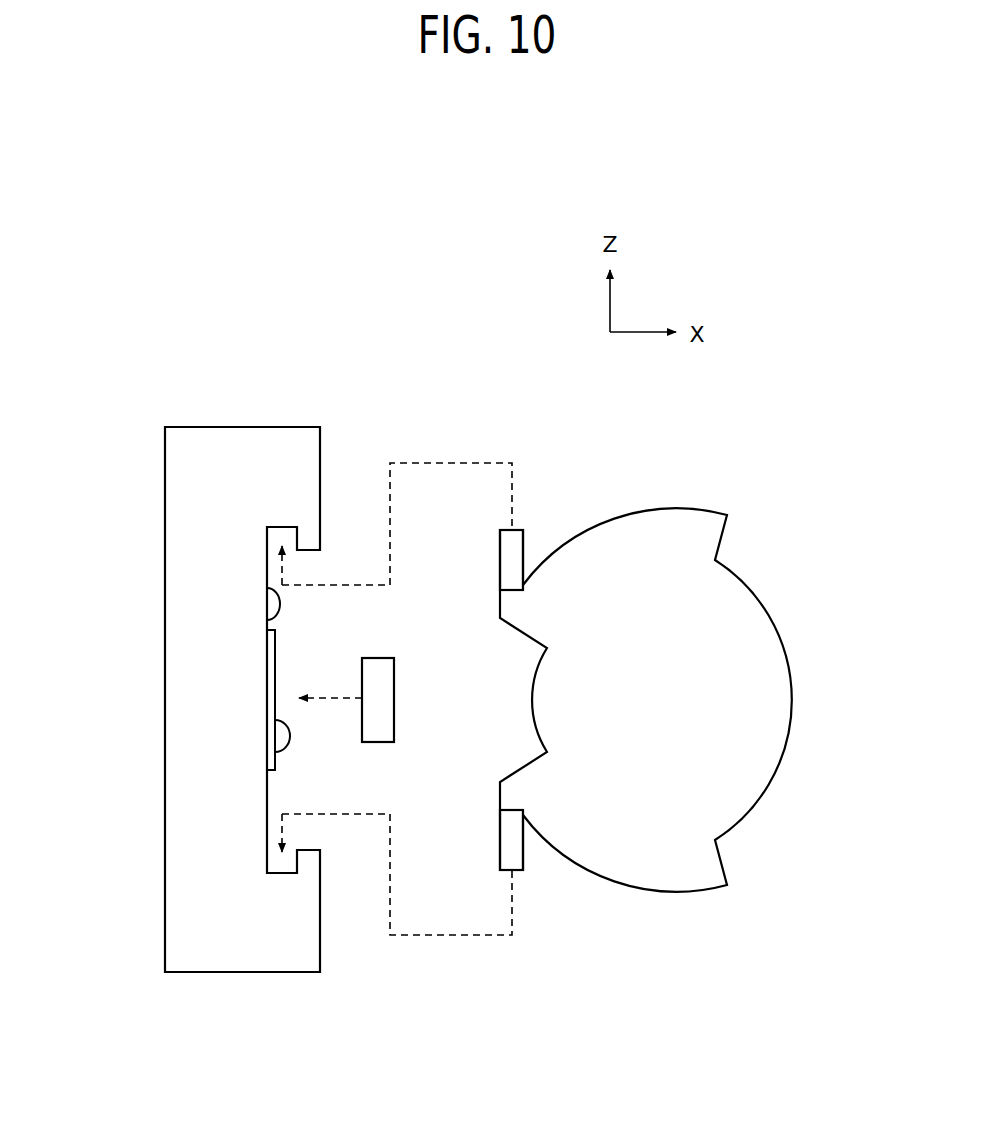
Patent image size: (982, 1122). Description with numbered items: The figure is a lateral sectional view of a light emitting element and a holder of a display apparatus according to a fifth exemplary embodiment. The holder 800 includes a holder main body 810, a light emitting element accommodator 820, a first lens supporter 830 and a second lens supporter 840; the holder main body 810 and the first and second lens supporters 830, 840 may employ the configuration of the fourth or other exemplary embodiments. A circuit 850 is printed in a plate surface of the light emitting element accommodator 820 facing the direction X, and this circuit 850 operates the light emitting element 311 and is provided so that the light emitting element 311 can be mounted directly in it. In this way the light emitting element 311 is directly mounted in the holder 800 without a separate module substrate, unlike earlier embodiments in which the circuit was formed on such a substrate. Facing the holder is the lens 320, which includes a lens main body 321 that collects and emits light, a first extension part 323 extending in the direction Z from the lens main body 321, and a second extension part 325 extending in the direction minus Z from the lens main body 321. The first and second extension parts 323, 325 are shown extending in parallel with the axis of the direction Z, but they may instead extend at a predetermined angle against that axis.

The holder 800 is at (194, 645).
The holder main body 810 is at (177, 441).
The light emitting element accommodator 820 is at (273, 620).
The first lens supporter 830 is at (280, 527).
The second lens supporter 840 is at (280, 877).
The circuit 850 is at (279, 743).
The light emitting element 311 is at (396, 700).
The lens 320 is at (691, 699).
The lens main body 321 is at (791, 700).
The first extension part 323 is at (521, 530).
The second extension part 325 is at (525, 872).